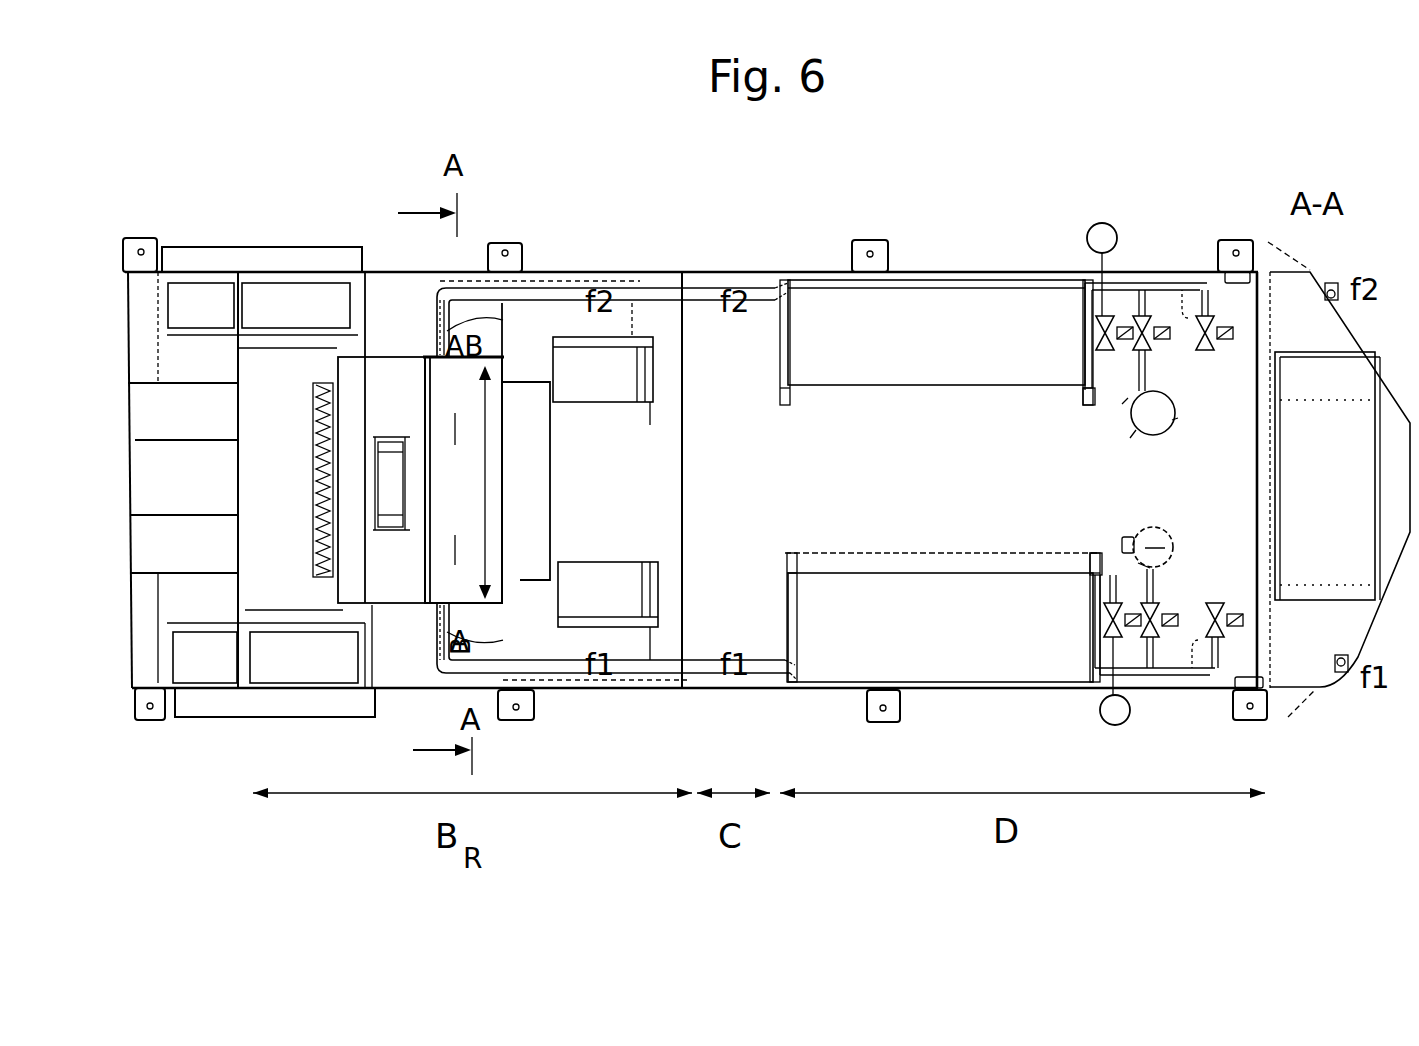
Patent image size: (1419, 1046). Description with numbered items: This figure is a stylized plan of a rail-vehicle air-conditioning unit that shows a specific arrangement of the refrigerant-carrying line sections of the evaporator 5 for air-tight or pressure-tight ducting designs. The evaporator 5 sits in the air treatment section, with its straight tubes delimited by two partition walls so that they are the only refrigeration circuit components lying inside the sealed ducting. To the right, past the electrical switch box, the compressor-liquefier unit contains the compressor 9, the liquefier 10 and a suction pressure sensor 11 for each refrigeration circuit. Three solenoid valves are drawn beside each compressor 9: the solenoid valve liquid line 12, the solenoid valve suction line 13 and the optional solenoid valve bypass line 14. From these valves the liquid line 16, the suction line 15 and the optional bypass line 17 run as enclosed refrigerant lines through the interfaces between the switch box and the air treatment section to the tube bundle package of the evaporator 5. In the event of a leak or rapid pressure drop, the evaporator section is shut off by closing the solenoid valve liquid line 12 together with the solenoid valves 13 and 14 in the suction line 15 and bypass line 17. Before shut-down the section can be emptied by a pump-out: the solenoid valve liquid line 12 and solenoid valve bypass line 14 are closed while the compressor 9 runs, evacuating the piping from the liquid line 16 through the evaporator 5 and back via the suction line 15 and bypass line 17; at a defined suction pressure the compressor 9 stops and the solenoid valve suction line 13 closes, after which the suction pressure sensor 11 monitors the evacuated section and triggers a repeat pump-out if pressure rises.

The evaporator 5 is at (463, 480).
The compressor 9 is at (1163, 479).
The liquefier 10 is at (940, 481).
The suction pressure sensor 11 is at (1134, 479).
The solenoid valve liquid line 12 is at (1216, 479).
The solenoid valve suction line 13 is at (1118, 476).
The solenoid valve bypass line 14 is at (1163, 479).
The suction line 15 is at (437, 339).
The liquid line 16 is at (497, 485).
The bypass line 17 is at (447, 329).